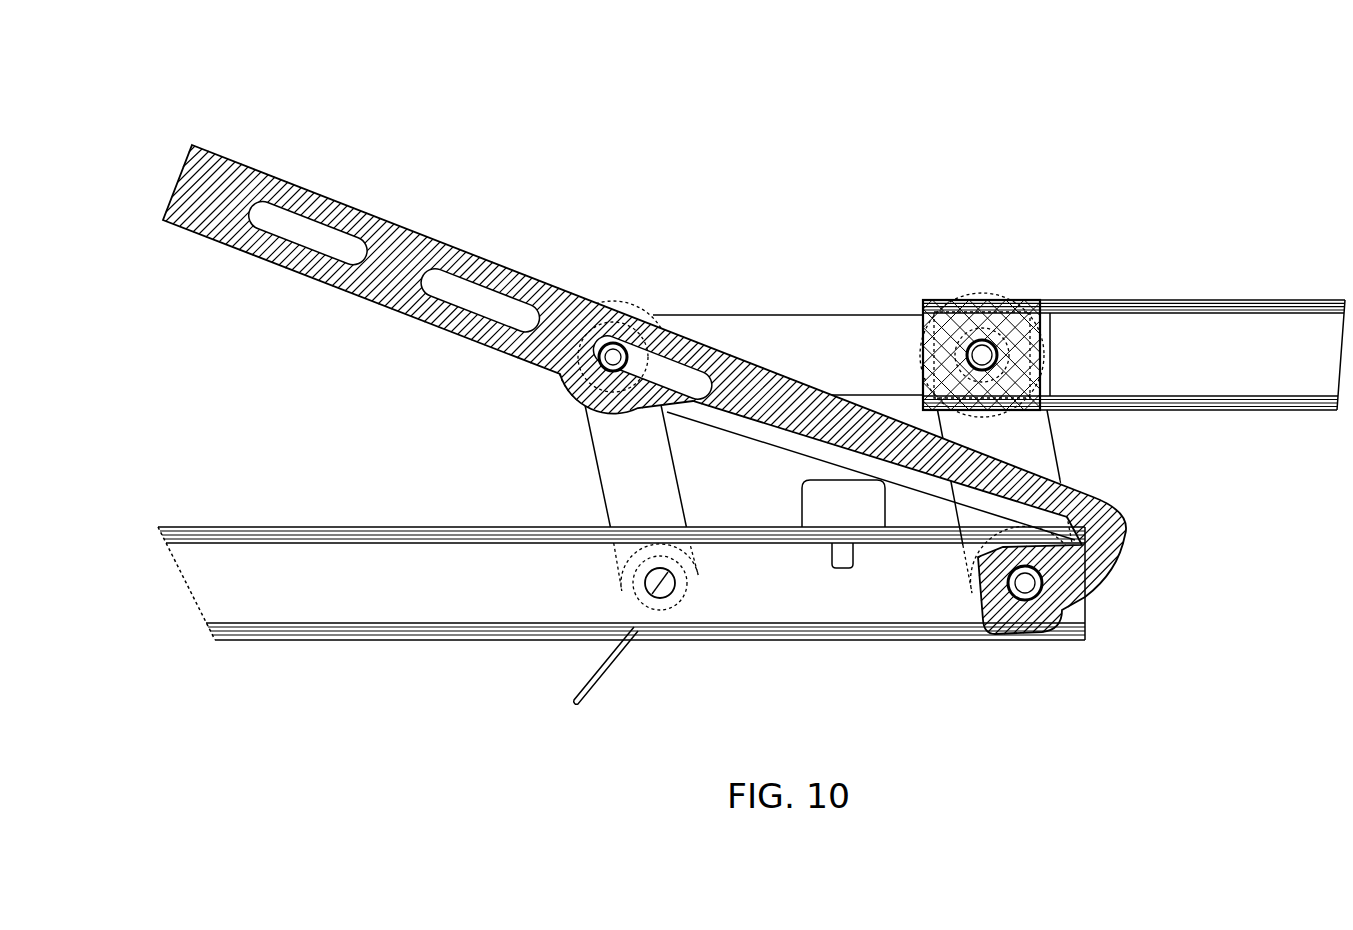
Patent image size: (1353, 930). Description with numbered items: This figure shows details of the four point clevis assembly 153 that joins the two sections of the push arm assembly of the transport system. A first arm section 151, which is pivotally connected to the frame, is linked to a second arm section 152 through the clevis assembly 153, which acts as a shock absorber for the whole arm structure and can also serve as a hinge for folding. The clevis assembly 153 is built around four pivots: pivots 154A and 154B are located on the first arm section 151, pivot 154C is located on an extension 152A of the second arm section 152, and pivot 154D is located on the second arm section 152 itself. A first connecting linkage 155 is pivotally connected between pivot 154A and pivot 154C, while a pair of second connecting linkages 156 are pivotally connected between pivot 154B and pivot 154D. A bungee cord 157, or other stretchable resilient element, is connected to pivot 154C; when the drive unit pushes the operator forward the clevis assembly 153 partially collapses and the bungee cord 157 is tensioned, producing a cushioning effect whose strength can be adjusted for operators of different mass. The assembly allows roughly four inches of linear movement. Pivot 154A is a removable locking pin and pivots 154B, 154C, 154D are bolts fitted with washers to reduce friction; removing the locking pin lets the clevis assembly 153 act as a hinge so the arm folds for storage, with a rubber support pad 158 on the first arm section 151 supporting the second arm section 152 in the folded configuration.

The first arm section 151 is at (505, 576).
The second arm section 152 is at (1212, 337).
The extension of second arm section 152A is at (822, 335).
The clevis assembly 153 is at (870, 120).
The pivot 154A is at (663, 590).
The pivot 154B is at (1025, 583).
The pivot 154C is at (613, 348).
The pivot 154D is at (985, 352).
The first connecting linkage 155 is at (640, 502).
The second connecting linkage 156 is at (1022, 432).
The bungee cord 157 is at (383, 253).
The rubber support pad 158 is at (857, 512).